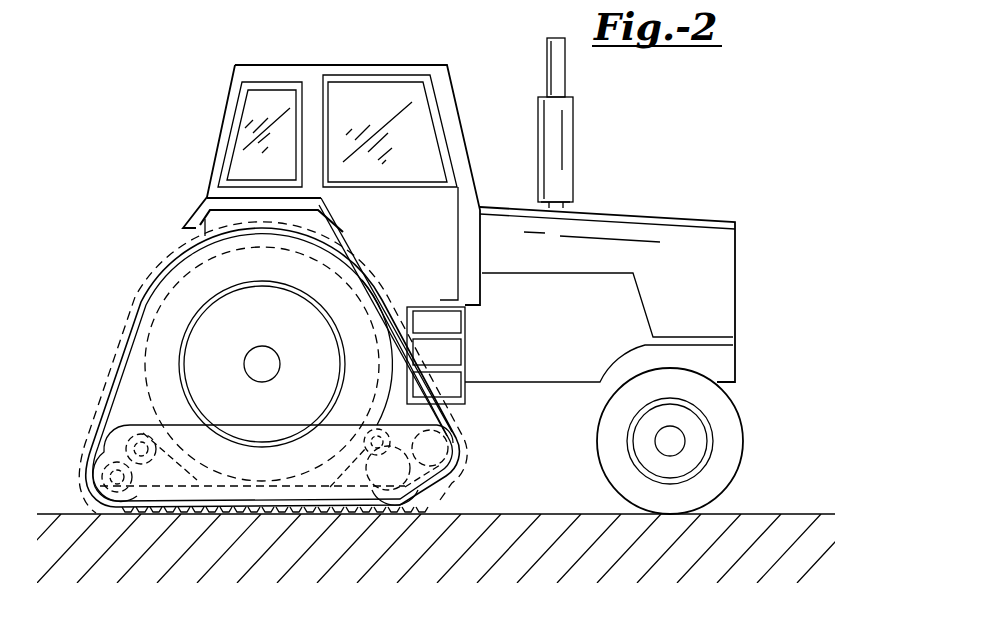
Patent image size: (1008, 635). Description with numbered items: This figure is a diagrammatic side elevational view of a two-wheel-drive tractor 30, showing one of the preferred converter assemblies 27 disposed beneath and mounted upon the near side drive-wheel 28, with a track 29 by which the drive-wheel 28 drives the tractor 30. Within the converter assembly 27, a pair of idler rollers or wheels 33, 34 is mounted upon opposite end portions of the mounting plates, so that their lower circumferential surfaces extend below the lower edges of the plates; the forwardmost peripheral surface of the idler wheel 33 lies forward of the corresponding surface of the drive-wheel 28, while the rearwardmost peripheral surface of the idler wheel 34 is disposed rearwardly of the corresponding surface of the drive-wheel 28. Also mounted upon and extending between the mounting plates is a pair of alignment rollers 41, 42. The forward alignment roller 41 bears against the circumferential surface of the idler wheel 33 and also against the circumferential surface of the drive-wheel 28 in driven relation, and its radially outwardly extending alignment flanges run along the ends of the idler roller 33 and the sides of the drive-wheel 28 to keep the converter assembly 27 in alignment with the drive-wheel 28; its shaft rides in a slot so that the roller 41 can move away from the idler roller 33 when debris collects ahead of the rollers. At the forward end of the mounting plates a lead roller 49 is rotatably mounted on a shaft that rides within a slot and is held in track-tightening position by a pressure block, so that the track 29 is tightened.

The converter assembly 27 is at (160, 408).
The drive-wheel 28 is at (277, 285).
The track 29 is at (113, 378).
The two-wheel-drive tractor 30 is at (661, 195).
The idler wheel 33 is at (425, 500).
The idler wheel 34 is at (98, 446).
The forward alignment roller 41 is at (388, 409).
The alignment roller 42 is at (100, 414).
The lead roller 49 is at (455, 443).